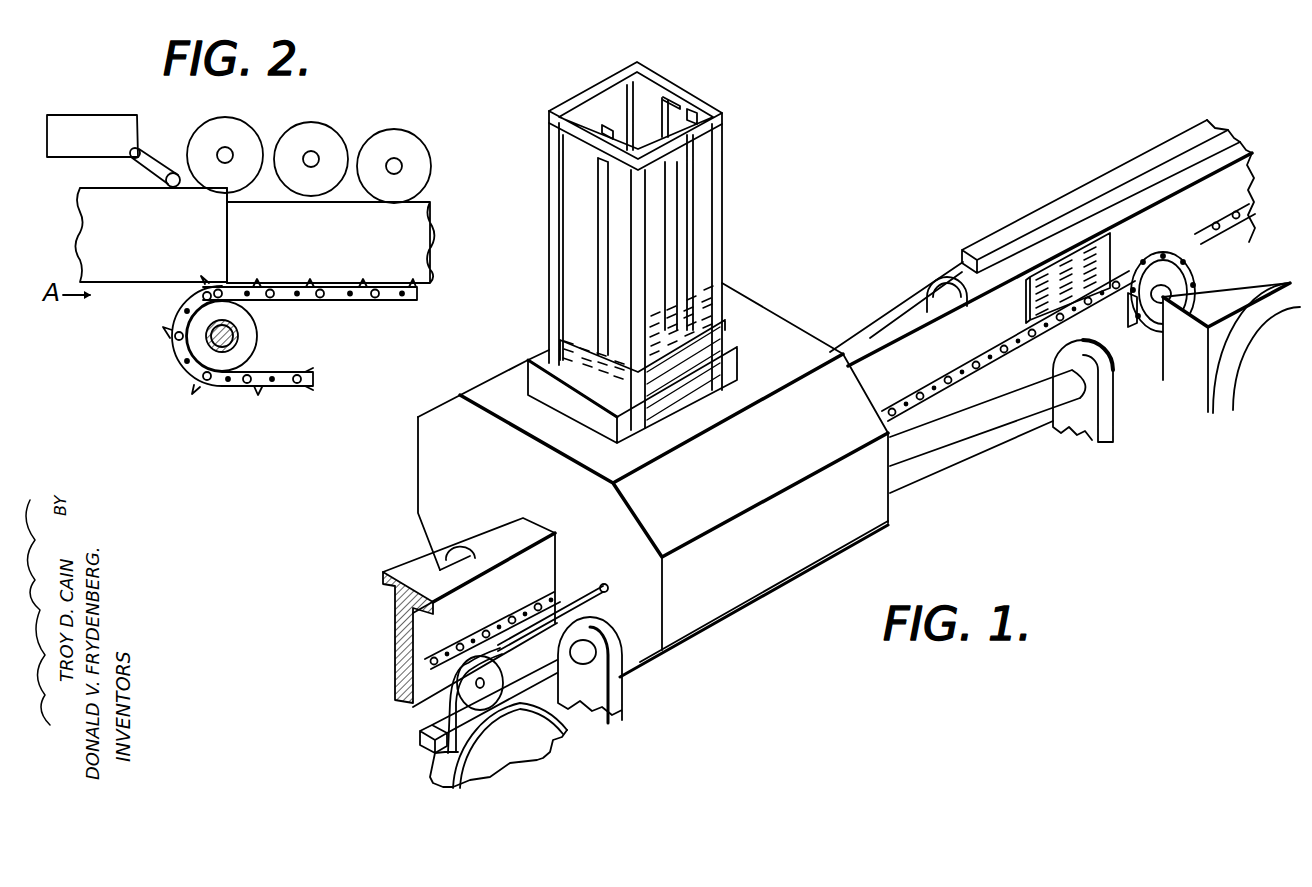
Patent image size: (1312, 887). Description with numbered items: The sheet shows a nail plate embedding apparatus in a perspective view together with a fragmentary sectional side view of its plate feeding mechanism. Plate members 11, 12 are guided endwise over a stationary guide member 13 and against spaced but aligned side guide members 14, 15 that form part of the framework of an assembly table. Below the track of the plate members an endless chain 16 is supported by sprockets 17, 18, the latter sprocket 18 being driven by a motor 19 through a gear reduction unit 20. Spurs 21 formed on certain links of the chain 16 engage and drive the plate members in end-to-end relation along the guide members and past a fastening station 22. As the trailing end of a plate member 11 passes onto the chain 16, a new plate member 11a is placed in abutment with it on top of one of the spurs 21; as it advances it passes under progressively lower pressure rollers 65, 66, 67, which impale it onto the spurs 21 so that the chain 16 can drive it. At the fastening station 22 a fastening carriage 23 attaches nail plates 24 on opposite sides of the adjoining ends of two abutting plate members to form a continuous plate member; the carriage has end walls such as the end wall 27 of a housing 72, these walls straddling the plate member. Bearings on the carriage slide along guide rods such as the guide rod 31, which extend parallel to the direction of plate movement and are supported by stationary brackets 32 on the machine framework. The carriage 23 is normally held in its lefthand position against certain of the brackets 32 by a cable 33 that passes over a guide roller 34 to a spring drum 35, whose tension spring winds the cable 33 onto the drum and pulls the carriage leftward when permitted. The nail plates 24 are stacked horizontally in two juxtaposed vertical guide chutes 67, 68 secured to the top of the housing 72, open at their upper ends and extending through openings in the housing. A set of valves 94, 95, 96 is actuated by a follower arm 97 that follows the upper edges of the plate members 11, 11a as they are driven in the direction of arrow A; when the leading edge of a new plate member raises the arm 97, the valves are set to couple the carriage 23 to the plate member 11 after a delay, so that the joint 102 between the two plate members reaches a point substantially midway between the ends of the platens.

In FIG. 2, the plate member 11 is at (431, 203).
In FIG. 1, the plate member 11 is at (914, 312).
In FIG. 2, the new plate member 11a is at (160, 274).
In FIG. 1, the plate member 12 is at (1103, 208).
In FIG. 1, the stationary guide member 13 is at (403, 681).
In FIG. 1, the side guide member 14 is at (384, 569).
In FIG. 1, the side guide member 15 is at (1141, 132).
In FIG. 2, the endless chain 16 is at (338, 302).
In FIG. 1, the endless chain 16 is at (511, 622).
In FIG. 2, the sprocket 17 is at (258, 340).
In FIG. 1, the sprocket 18 is at (1186, 270).
In FIG. 1, the motor 19 is at (1243, 410).
In FIG. 1, the gear reduction unit 20 is at (1170, 378).
In FIG. 2, the spur 21 is at (212, 264).
In FIG. 1, the fastening station 22 is at (792, 266).
In FIG. 1, the fastening carriage 23 is at (441, 393).
In FIG. 1, the nail plate 24 is at (567, 342).
In FIG. 1, the end wall 27 is at (424, 498).
In FIG. 1, the guide rod 31 is at (973, 445).
In FIG. 1, the stationary bracket 32 is at (957, 273).
In FIG. 1, the cable 33 is at (572, 598).
In FIG. 1, the guide roller 34 is at (470, 693).
In FIG. 1, the spring drum 35 is at (549, 739).
In FIG. 2, the pressure roller 65 is at (240, 128).
In FIG. 2, the pressure roller 66 is at (325, 134).
In FIG. 2, the pressure roller 67 is at (411, 142).
In FIG. 1, the vertical guide chute 68 is at (666, 74).
In FIG. 1, the housing 72 is at (742, 597).
In FIG. 2, the valve 94 is at (88, 114).
In FIG. 2, the valve 95 is at (110, 128).
In FIG. 2, the valve 96 is at (134, 128).
In FIG. 2, the follower arm 97 is at (170, 170).
In FIG. 2, the joint 102 is at (232, 227).